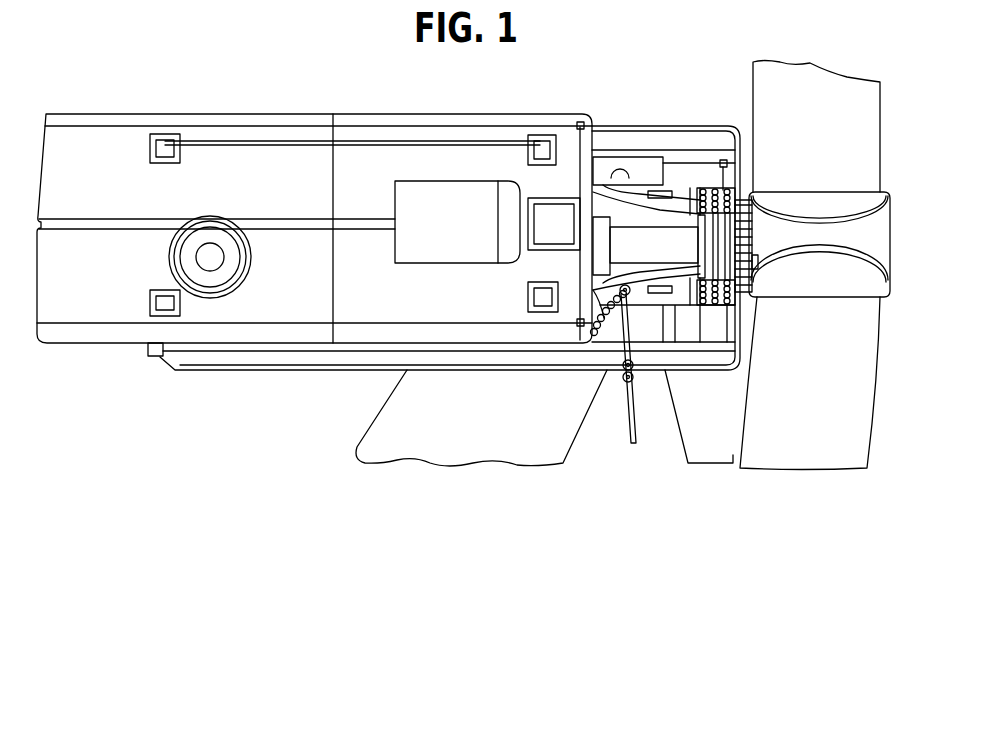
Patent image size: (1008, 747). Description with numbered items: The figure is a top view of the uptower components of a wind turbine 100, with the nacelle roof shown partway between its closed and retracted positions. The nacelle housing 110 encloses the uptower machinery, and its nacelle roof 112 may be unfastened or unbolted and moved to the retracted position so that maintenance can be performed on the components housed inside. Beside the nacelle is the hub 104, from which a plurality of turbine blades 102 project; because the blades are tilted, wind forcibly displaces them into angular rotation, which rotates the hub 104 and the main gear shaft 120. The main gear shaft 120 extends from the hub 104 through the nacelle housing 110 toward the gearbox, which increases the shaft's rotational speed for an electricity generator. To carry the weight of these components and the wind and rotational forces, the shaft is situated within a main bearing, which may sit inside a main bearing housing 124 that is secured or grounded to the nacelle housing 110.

The wind turbine 100 is at (414, 474).
The turbine blades 102 is at (813, 407).
The hub 104 is at (763, 157).
The nacelle housing 110 is at (322, 387).
The nacelle roof 112 is at (352, 180).
The main gear shaft 120 is at (657, 243).
The main bearing housing 124 is at (715, 293).